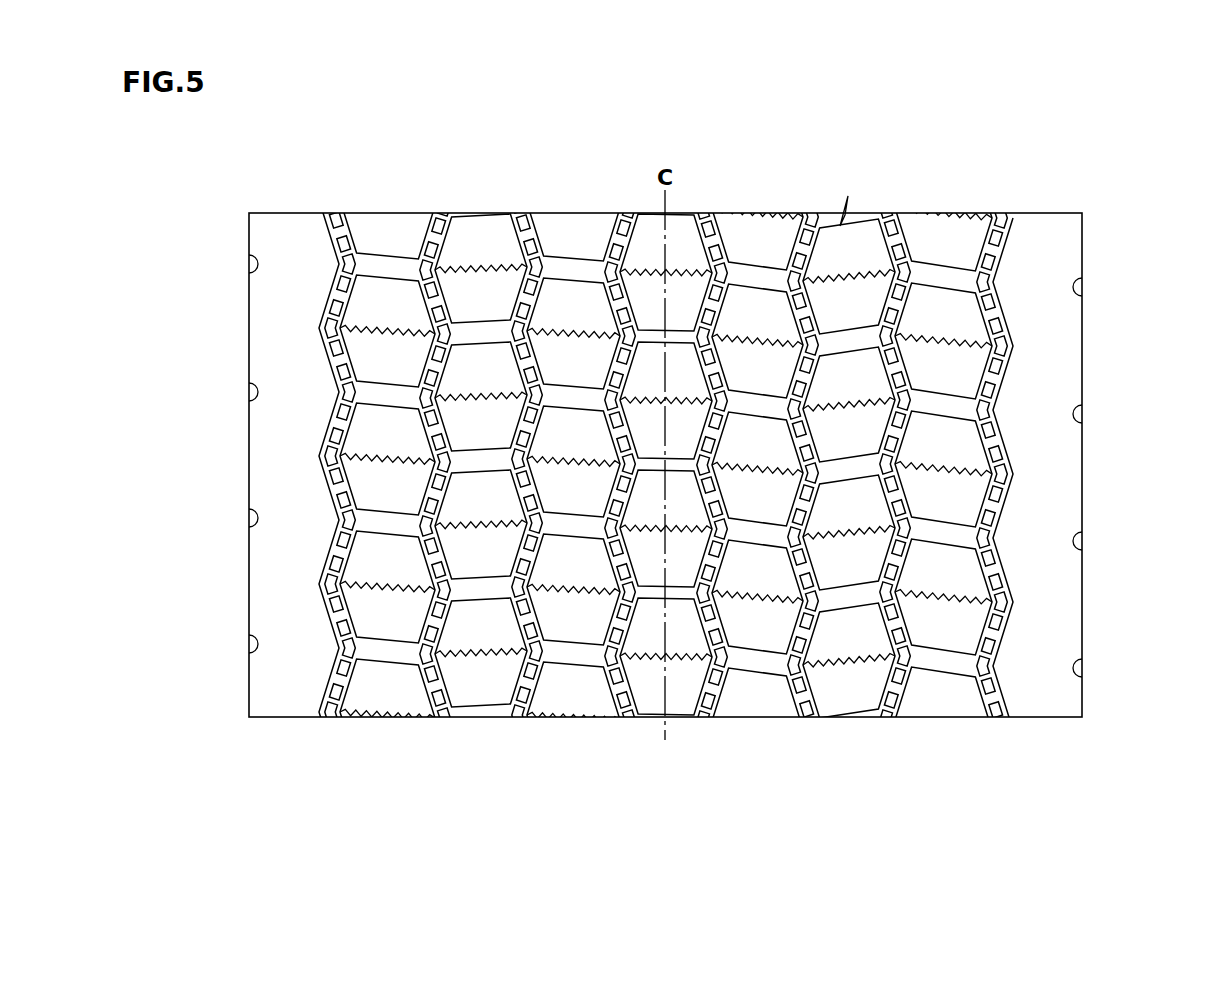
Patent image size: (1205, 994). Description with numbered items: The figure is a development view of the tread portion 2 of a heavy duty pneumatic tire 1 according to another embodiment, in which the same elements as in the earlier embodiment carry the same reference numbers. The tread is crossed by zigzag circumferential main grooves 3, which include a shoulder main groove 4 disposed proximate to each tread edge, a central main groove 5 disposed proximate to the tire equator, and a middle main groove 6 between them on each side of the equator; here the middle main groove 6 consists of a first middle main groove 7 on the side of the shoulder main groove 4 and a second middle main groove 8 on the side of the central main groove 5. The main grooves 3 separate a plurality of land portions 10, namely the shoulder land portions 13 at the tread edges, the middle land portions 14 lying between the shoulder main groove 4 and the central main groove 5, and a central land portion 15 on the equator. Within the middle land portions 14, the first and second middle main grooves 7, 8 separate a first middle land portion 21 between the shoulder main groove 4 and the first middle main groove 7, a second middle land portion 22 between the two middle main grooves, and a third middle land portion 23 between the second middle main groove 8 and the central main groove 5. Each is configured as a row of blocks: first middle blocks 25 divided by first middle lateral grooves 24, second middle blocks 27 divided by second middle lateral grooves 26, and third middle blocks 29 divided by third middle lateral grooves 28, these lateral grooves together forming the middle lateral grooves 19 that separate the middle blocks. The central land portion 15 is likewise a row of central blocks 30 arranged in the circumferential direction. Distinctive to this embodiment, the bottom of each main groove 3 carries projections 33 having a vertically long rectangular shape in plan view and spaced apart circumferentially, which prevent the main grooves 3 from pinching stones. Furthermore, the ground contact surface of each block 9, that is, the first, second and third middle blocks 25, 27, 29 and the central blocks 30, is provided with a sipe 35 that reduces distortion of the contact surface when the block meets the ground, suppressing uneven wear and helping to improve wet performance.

The heavy duty pneumatic tire 1 is at (752, 177).
The tread portion 2 is at (665, 465).
The main grooves 3 is at (630, 145).
The shoulder main groove 4 is at (346, 213).
The central main groove 5 is at (620, 215).
The middle main groove 6 is at (445, 176).
The first middle main groove 7 is at (438, 215).
The second middle main groove 8 is at (528, 215).
The block 9 is at (1146, 288).
The land portions 10 is at (295, 758).
The shoulder land portions 13 is at (1037, 222).
The middle land portions 14 is at (386, 699).
The central land portion 15 is at (645, 699).
The middle lateral grooves 19 is at (191, 408).
The first middle land portion 21 is at (934, 700).
The second middle land portion 22 is at (849, 692).
The third middle land portion 23 is at (755, 699).
The first middle lateral grooves 24 is at (388, 521).
The first middle blocks 25 is at (961, 326).
The second middle lateral grooves 26 is at (485, 461).
The second middle blocks 27 is at (869, 386).
The third middle lateral grooves 28 is at (574, 524).
The third middle blocks 29 is at (771, 494).
The central blocks 30 is at (691, 554).
The projections 33 is at (332, 298).
The sipe 35 is at (405, 333).